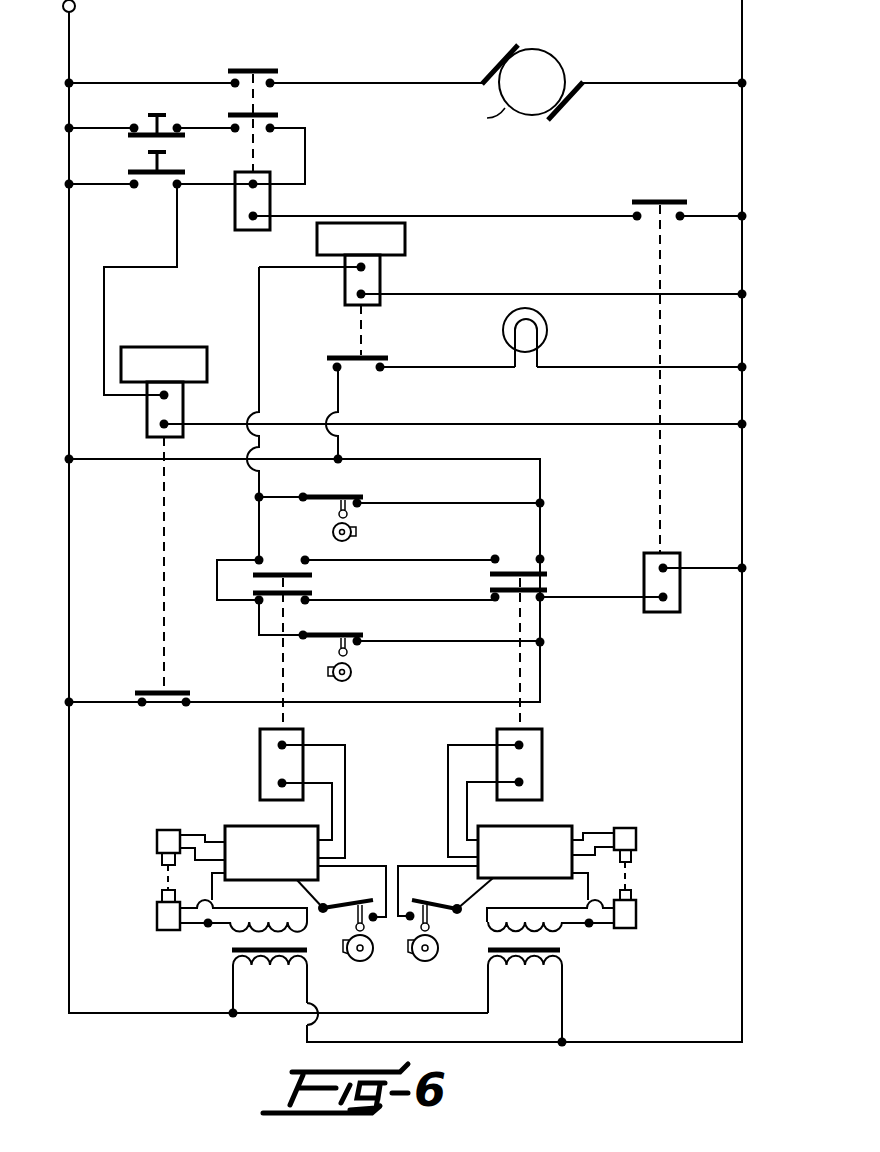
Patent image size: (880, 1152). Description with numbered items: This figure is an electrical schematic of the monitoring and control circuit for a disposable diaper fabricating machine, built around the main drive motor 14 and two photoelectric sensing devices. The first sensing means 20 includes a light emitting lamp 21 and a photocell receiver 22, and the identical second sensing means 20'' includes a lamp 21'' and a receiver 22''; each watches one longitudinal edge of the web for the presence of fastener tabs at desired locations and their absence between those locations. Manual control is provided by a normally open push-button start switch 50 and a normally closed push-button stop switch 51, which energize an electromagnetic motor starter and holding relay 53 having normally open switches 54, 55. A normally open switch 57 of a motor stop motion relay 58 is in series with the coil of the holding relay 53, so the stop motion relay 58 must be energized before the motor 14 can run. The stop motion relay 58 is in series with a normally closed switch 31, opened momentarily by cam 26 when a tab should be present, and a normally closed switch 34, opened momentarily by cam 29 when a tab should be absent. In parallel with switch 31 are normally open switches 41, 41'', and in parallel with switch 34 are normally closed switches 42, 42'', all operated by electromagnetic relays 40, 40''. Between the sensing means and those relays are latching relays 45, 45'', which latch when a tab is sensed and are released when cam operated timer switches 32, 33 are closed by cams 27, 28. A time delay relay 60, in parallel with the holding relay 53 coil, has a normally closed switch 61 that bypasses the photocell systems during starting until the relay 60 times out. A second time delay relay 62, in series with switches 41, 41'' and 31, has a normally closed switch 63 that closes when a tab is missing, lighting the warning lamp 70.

The drive motor 14 is at (538, 58).
The first sensing means 20 is at (128, 860).
The second sensing means 20'' is at (670, 856).
The light emitting lamp 21 is at (139, 911).
The light emitting lamp 21'' is at (656, 909).
The photocell receiver 22 is at (156, 825).
The photocell receiver 22'' is at (647, 828).
The cam 26 is at (333, 532).
The cam 27 is at (355, 955).
The cam 28 is at (422, 956).
The cam 29 is at (354, 673).
The normally closed switch 31 is at (342, 496).
The cam operated timer switch 32 is at (372, 904).
The cam operated timer switch 33 is at (414, 904).
The normally closed switch 34 is at (345, 634).
The electromagnetic relay 40 is at (252, 762).
The electromagnetic relay 40'' is at (552, 761).
The normally open switch 41 is at (261, 551).
The normally open switch 41'' is at (544, 553).
The normally closed switch 42 is at (259, 653).
The normally closed switch 42'' is at (544, 653).
The latching relay 45 is at (258, 834).
The latching relay 45'' is at (543, 832).
The start switch 50 is at (146, 157).
The stop switch 51 is at (150, 110).
The motor starter and holding relay 53 is at (238, 210).
The normally open switch 54 is at (276, 112).
The normally open switch 55 is at (265, 66).
The normally open switch 57 is at (660, 200).
The motor stop motion relay 58 is at (680, 594).
The time delay relay 60 is at (170, 416).
The normally closed switch 61 is at (168, 692).
The time delay relay 62 is at (380, 276).
The normally closed switch 63 is at (372, 354).
The warning lamp 70 is at (548, 334).